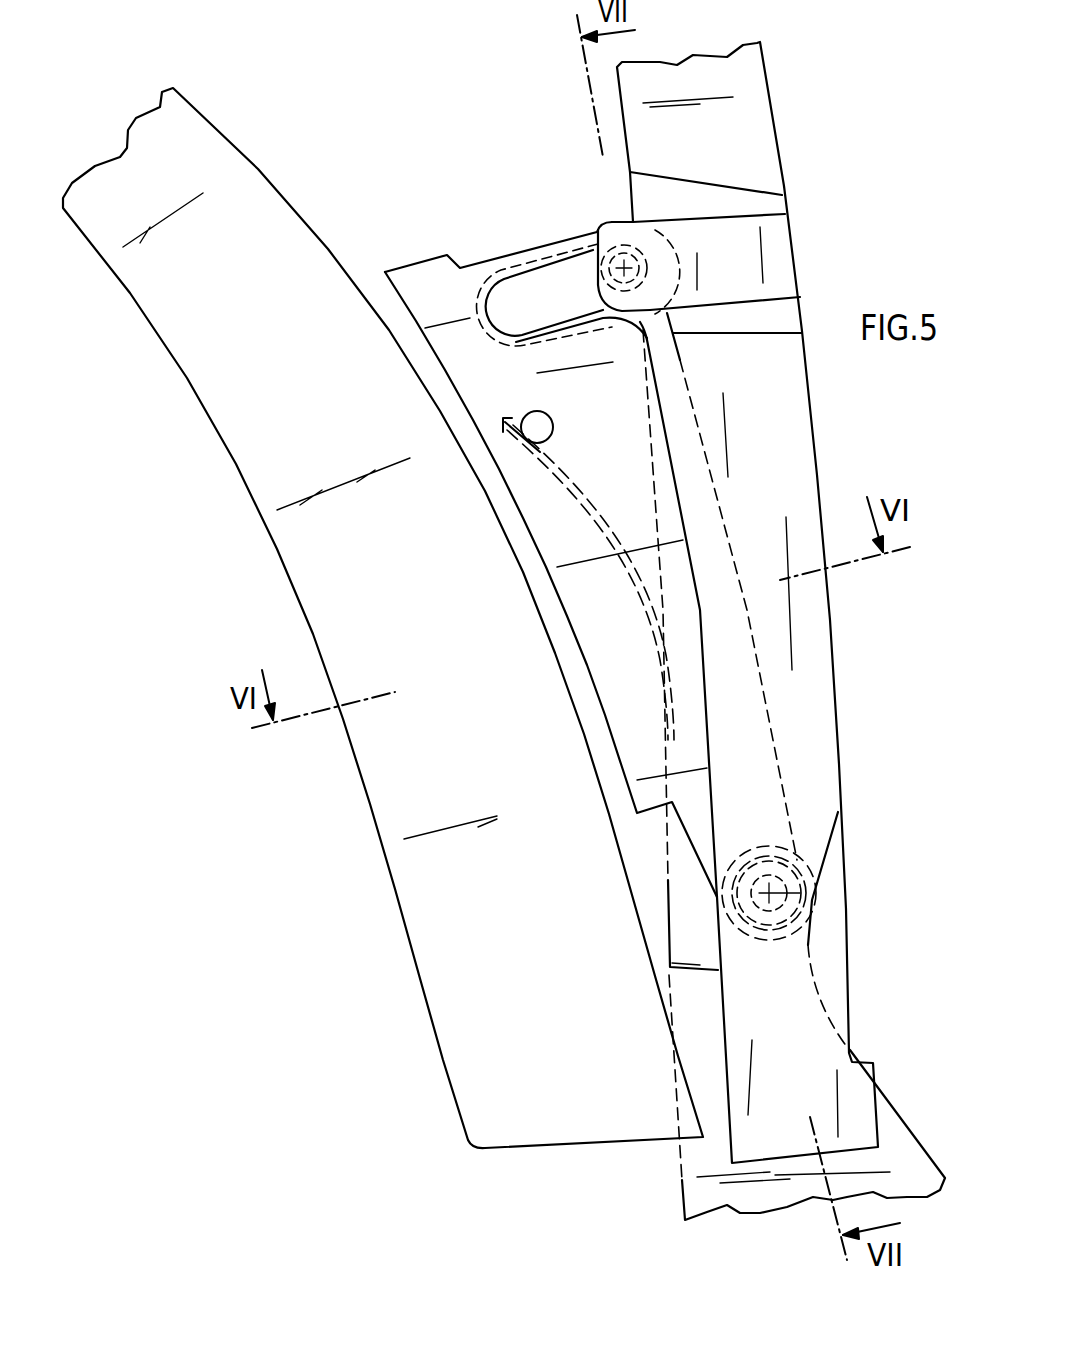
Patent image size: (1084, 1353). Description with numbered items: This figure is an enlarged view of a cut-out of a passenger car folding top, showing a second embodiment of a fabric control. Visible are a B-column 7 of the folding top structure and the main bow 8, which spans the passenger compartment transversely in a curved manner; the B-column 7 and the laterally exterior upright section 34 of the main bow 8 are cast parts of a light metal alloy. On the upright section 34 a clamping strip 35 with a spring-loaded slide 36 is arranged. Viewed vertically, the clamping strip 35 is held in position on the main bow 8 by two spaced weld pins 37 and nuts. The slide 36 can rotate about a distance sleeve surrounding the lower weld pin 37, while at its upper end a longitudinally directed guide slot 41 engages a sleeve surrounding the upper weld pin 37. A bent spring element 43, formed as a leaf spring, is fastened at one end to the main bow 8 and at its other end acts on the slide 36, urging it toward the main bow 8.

The B-column 7 is at (240, 410).
The main bow 8 is at (750, 84).
The upright section 34 is at (820, 467).
The clamping strip 35 is at (782, 262).
The spring-loaded slide 36 is at (482, 258).
The weld pin 37 is at (618, 256).
The guide slot 41 is at (543, 284).
The spring element 43 is at (600, 520).